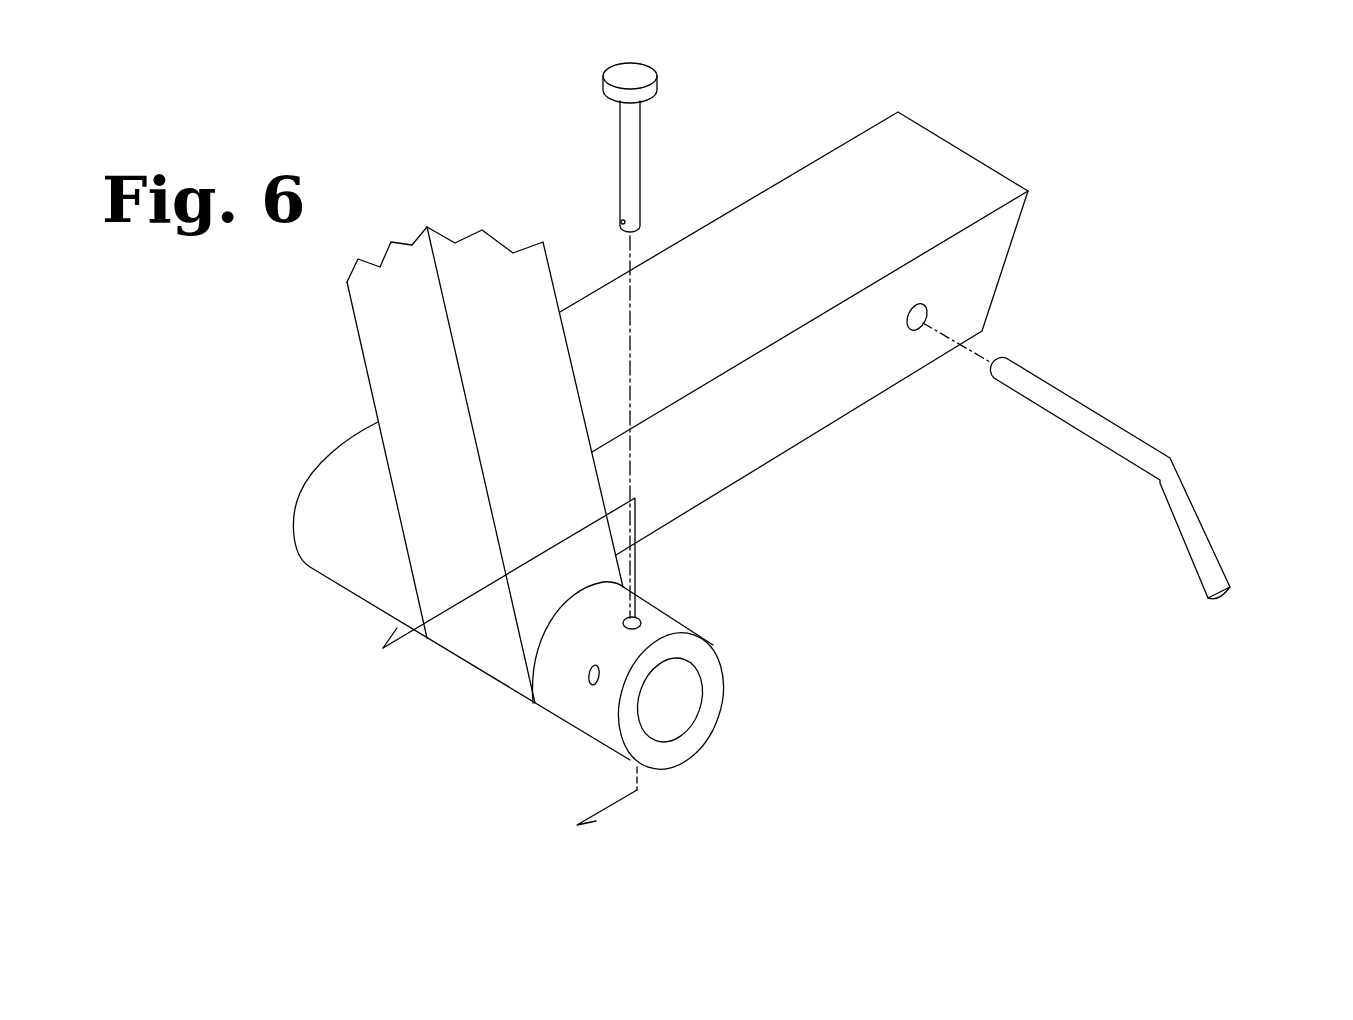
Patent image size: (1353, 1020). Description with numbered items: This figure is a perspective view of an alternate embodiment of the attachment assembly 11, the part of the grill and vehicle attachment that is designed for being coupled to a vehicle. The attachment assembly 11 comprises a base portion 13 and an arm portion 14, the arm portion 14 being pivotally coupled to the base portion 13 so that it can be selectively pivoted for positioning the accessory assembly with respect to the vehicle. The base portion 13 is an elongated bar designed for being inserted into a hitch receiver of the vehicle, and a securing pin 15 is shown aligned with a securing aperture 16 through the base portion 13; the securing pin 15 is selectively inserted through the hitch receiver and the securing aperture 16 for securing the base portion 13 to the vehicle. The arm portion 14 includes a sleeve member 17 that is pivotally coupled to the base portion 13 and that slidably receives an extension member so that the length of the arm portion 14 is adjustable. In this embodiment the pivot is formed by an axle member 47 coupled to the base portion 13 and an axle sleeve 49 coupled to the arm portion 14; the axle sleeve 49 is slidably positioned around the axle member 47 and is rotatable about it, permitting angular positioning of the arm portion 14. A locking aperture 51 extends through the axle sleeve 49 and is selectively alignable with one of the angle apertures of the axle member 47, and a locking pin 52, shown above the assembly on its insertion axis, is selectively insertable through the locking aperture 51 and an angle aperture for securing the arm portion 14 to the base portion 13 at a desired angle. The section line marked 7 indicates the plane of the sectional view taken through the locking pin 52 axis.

The section line 7- 7 is at (494, 672).
The attachment assembly 11 is at (1070, 170).
The base portion 13 is at (920, 172).
The arm portion 14 is at (493, 305).
The securing pin 15 is at (1143, 452).
The securing aperture 16 is at (917, 328).
The sleeve member 17 is at (397, 362).
The axle member 47 is at (668, 698).
The axle sleeve 49 is at (645, 752).
The locking aperture 51 is at (588, 675).
The locking pin 52 is at (628, 120).